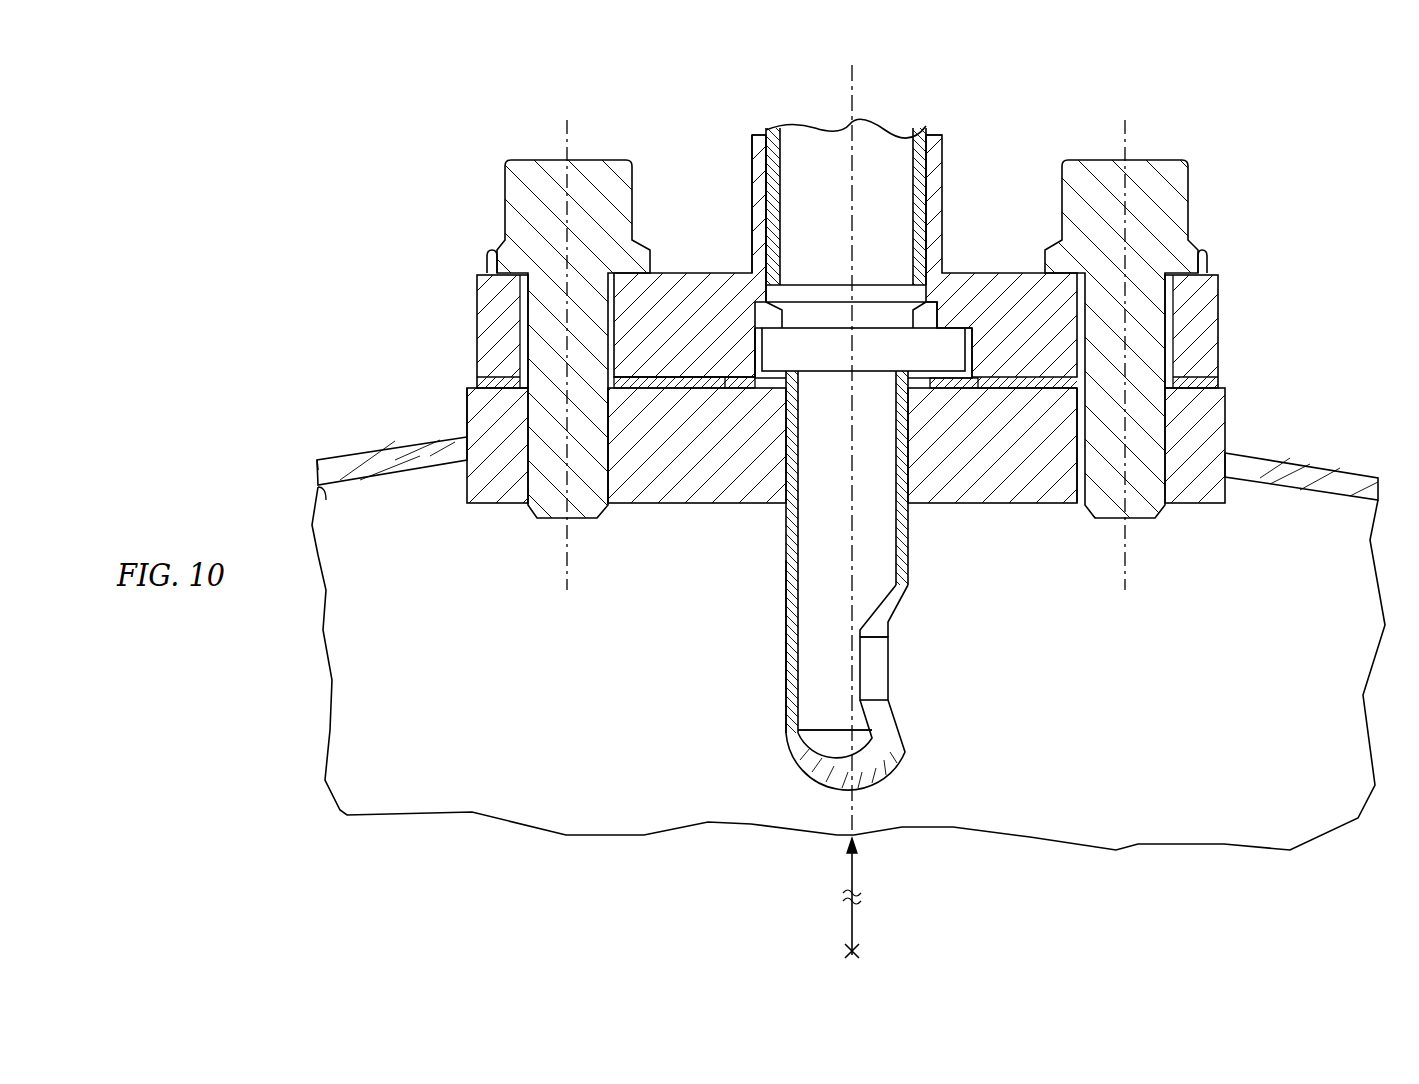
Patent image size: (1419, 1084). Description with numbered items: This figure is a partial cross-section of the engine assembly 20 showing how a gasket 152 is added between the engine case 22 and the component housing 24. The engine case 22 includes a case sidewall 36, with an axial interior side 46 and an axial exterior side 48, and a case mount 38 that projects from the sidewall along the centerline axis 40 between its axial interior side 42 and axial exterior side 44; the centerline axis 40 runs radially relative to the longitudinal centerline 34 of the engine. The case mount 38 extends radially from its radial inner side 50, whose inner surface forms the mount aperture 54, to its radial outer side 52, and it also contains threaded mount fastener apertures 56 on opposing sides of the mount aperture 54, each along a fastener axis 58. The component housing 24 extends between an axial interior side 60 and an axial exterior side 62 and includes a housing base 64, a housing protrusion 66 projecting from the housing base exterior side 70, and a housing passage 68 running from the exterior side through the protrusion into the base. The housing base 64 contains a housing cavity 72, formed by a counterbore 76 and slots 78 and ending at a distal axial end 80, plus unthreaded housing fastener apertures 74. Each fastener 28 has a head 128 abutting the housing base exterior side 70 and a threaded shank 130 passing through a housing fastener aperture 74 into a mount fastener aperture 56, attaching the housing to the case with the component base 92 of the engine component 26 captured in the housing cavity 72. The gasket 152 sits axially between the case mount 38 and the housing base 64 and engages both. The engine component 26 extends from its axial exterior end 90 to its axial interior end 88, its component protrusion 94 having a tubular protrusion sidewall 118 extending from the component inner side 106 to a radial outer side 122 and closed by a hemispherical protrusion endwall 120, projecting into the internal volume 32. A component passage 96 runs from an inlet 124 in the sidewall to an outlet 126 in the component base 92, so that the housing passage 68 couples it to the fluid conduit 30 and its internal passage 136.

The engine assembly 20 is at (338, 138).
The engine case 22 is at (804, 480).
The component housing 24 is at (443, 276).
The engine component 26 is at (761, 698).
The fasteners 28 is at (543, 150).
The fluid conduit 30 is at (810, 115).
The internal volume 32 is at (393, 768).
The longitudinal centerline 34 is at (860, 950).
The case sidewall 36 is at (317, 477).
The case mount 38 is at (1028, 454).
The centerline axis 40 is at (852, 72).
The axial interior side of the case mount 42 is at (487, 506).
The axial exterior side of the case mount 44 is at (700, 377).
The axial interior side of the case sidewall 46 is at (322, 498).
The axial exterior side of the case sidewall 48 is at (312, 460).
The radial inner side of the case mount 50 is at (847, 437).
The radial outer side of the case mount 52 is at (467, 420).
The mount aperture 54 is at (762, 499).
The mount fastener apertures 56 is at (620, 464).
The fastener axis 58 is at (567, 127).
The axial interior side of the component housing 60 is at (723, 390).
The axial exterior side of the component housing 62 is at (752, 133).
The housing base 64 is at (1038, 366).
The housing protrusion 66 is at (752, 182).
The housing passage 68 is at (754, 220).
The axial exterior side of the housing base 70 is at (492, 258).
The housing cavity 72 is at (948, 323).
The housing fastener apertures 74 is at (508, 327).
The counterbore 76 is at (745, 347).
The slots 78 is at (994, 347).
The distal axial end of the housing cavity 80 is at (932, 337).
The axial interior end of the engine component 88 is at (845, 782).
The axial exterior end of the engine component 90 is at (976, 342).
The component base 92 is at (964, 404).
The component protrusion 94 is at (765, 610).
The component passage 96 is at (813, 571).
The component inner side 106 is at (893, 555).
The protrusion sidewall 118 is at (792, 657).
The protrusion endwall 120 is at (850, 790).
The radial outer side of the component protrusion 122 is at (908, 530).
The inlet 124 is at (870, 685).
The outlet 126 is at (823, 380).
The head 128 is at (518, 244).
The threaded shank 130 is at (527, 427).
The internal passage 136 is at (862, 174).
The gasket 152 is at (1237, 381).